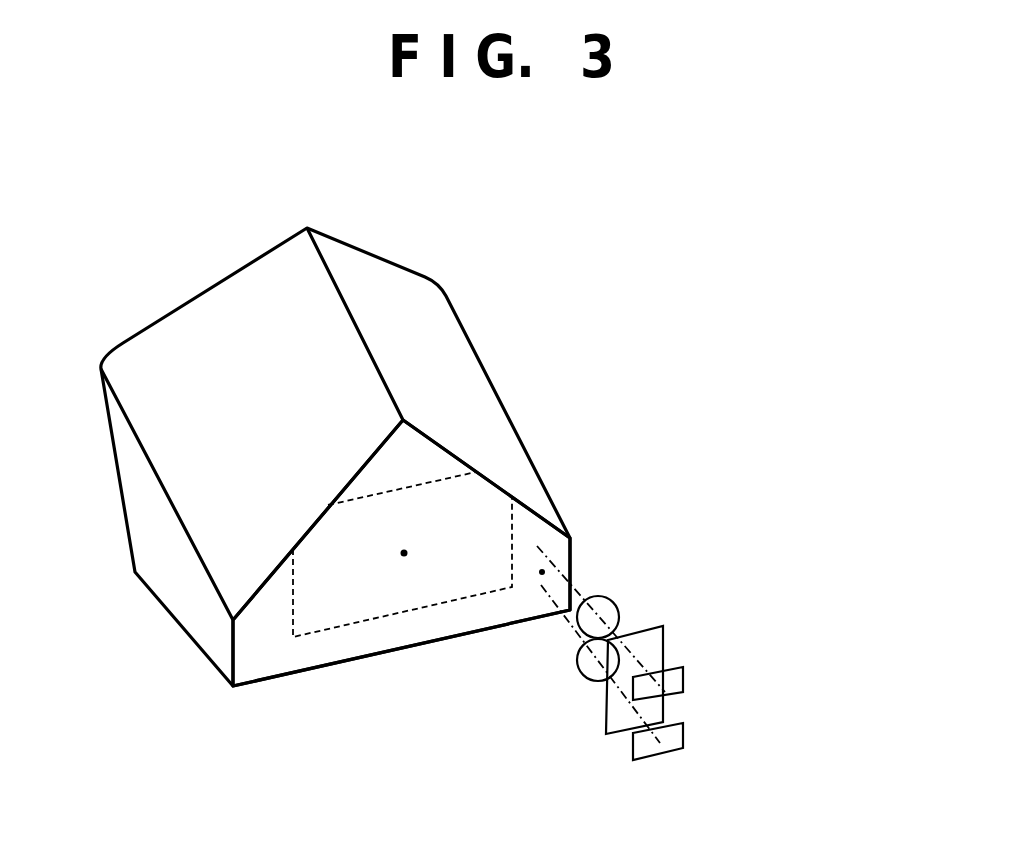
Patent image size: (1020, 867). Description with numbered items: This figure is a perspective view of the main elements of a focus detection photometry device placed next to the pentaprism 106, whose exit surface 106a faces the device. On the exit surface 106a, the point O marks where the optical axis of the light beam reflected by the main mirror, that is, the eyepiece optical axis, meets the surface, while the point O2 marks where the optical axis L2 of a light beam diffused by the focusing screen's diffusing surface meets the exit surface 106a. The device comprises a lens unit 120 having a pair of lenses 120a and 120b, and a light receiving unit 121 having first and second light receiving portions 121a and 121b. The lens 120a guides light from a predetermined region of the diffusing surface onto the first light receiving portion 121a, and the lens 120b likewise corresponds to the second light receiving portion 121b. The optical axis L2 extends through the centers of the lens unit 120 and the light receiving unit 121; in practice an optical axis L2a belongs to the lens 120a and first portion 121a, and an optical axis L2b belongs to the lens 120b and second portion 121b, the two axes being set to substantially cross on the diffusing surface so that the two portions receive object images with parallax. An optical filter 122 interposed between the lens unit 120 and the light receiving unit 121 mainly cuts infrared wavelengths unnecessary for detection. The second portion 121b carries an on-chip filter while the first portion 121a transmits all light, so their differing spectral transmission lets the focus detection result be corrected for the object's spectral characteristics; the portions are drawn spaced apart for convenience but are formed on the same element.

The pentaprism 106 is at (175, 577).
The exit surface 106a is at (275, 660).
The point O is at (404, 553).
The point O2 is at (542, 572).
The optical axis L2 is at (562, 604).
The optical axis L2a is at (572, 620).
The optical axis L2b is at (580, 597).
The lens unit 120 is at (706, 598).
The lens 120a is at (615, 645).
The lens 120b is at (612, 598).
The optical filter 122 is at (653, 645).
The light receiving unit 121 is at (775, 715).
The first light receiving portion 121a is at (675, 735).
The second light receiving portion 121b is at (675, 680).